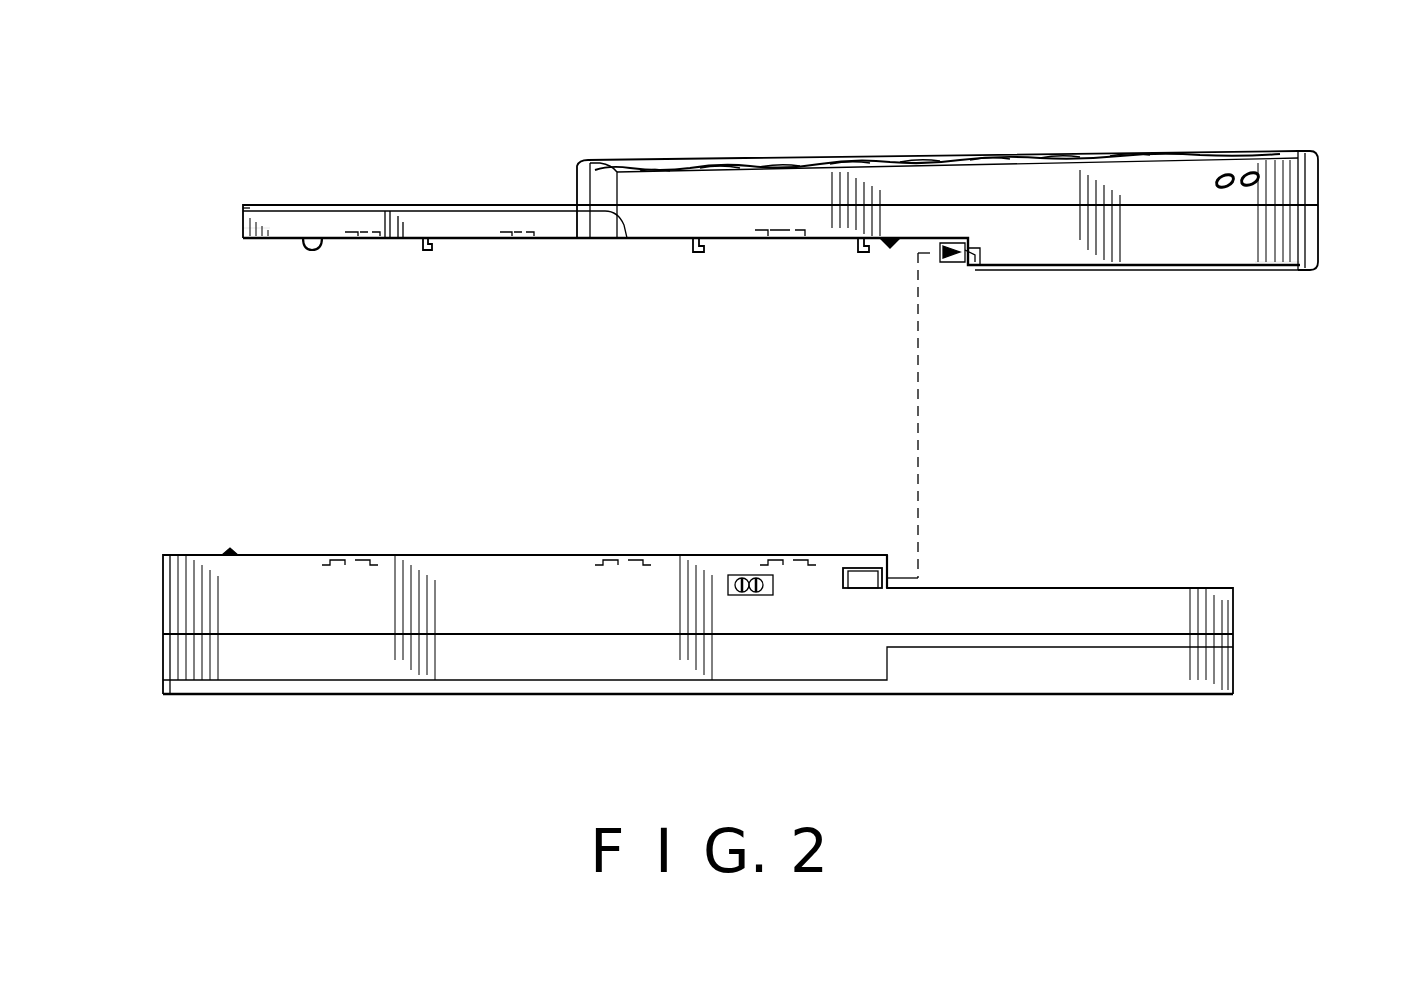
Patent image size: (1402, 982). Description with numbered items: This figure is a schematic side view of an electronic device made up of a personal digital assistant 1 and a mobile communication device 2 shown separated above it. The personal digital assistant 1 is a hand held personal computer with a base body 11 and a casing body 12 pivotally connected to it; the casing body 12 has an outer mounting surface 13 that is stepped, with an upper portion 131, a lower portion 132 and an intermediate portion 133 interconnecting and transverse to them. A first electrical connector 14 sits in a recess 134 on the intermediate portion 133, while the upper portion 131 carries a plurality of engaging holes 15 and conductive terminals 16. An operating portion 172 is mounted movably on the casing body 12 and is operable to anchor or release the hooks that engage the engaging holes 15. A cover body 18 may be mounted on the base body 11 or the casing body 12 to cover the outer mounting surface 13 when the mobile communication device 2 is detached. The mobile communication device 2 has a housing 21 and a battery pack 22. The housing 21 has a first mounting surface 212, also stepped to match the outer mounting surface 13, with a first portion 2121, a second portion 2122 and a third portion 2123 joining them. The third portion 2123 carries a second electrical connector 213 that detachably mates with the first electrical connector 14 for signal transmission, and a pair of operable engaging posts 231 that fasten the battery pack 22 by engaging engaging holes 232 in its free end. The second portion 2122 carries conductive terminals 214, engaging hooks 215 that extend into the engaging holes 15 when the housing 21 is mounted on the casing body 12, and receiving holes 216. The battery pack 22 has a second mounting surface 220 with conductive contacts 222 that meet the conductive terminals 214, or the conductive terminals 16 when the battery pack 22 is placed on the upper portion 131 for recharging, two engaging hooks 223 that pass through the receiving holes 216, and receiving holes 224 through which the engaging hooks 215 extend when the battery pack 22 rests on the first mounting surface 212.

The personal digital assistant 1 is at (700, 576).
The mobile communication device 2 is at (745, 325).
The base body 11 is at (188, 668).
The casing body 12 is at (195, 605).
The outer mounting surface 13 is at (420, 553).
The first electrical connector 14 is at (862, 590).
The engaging holes 15 is at (352, 555).
The conductive terminals 16 is at (226, 552).
The cover body 18 is at (990, 686).
The housing 21 is at (1300, 193).
The battery pack 22 is at (245, 232).
The upper portion 131 is at (478, 555).
The lower portion 132 is at (1125, 588).
The intermediate portion 133 is at (893, 558).
The recess 134 is at (893, 578).
The operating portion 172 is at (735, 575).
The first mounting surface 212 is at (1236, 274).
The second electrical connector 213 is at (940, 266).
The conductive terminals 214 is at (886, 246).
The engaging hooks 215 is at (697, 254).
The receiving holes 216 is at (770, 240).
The second mounting surface 220 is at (262, 246).
The conductive contacts 222 is at (312, 254).
The engaging hooks 223 is at (430, 254).
The receiving holes 224 is at (355, 240).
The operable engaging posts 231 is at (970, 266).
The engaging holes 232 is at (242, 206).
The first portion 2121 is at (1122, 270).
The second portion 2122 is at (722, 240).
The third portion 2123 is at (952, 266).